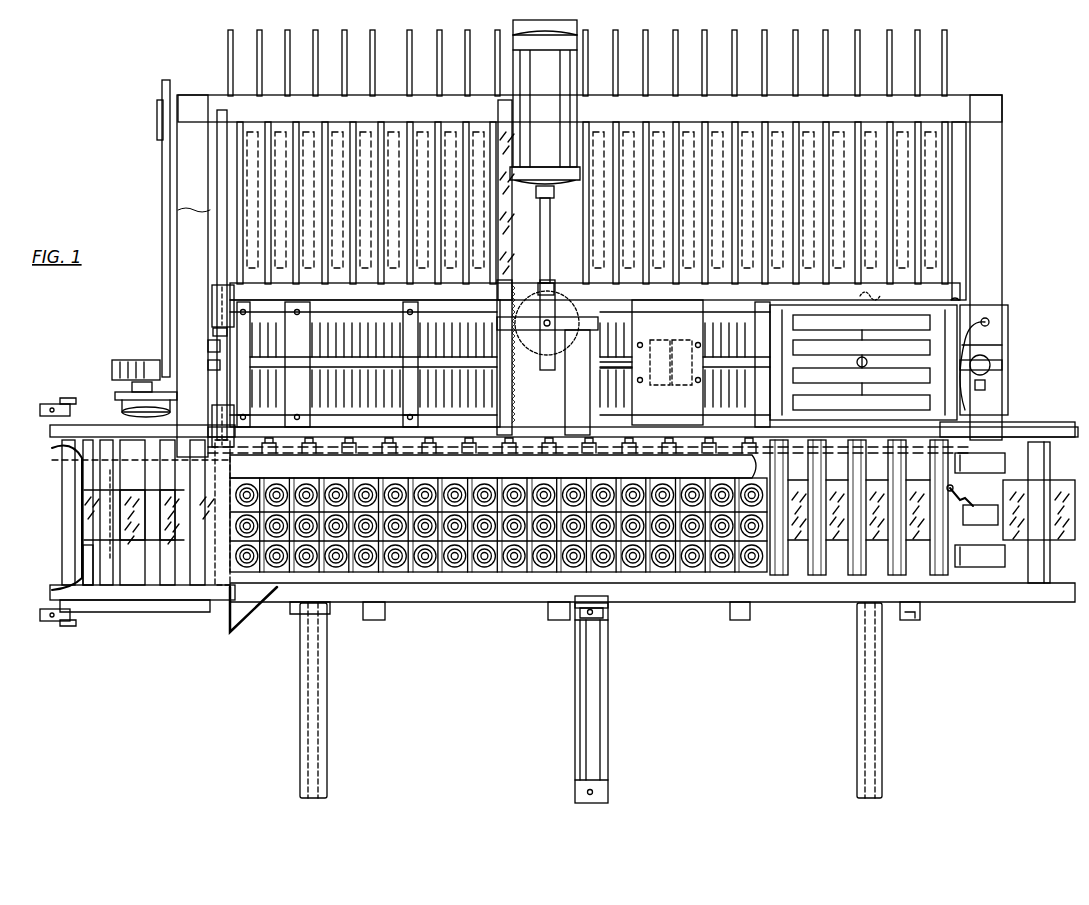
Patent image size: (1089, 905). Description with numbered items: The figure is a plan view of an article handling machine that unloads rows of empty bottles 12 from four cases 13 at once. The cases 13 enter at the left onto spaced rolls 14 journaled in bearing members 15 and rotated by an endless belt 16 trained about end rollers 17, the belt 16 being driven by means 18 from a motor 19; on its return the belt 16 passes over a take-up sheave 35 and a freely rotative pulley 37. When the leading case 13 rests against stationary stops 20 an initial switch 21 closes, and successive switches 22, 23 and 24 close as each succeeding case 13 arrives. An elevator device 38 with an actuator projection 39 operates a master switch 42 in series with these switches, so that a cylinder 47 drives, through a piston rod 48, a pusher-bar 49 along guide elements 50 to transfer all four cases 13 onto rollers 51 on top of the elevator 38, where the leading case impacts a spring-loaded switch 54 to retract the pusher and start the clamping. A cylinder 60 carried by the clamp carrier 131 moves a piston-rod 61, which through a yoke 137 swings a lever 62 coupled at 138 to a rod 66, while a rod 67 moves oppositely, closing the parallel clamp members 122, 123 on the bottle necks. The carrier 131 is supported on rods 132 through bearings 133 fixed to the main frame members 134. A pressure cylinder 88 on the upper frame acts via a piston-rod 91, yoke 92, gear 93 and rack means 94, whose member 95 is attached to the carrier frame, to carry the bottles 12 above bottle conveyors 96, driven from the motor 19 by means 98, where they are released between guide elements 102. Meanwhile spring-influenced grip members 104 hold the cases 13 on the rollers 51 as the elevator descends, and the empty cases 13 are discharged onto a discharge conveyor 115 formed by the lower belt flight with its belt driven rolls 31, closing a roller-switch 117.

The bottles 12 is at (355, 490).
The cases 13 is at (440, 485).
The rolls 14 is at (910, 492).
The bearing members 15 is at (50, 431).
The endless belt 16 is at (1050, 490).
The end rollers 17 is at (90, 547).
The drive means 18 is at (120, 390).
The motor 19 is at (100, 470).
The stationary stops 20 is at (980, 510).
The initial electric switch 21 is at (968, 505).
The switch 22 is at (762, 590).
The switch 23 is at (545, 590).
The switch 24 is at (395, 590).
The belt driven rolls 31 is at (1045, 558).
The take-up sheave 35 is at (108, 497).
The freely rotative pulley 37 is at (172, 515).
The elevator device 38 is at (800, 312).
The actuator projection 39 is at (1000, 330).
The master switch 42 is at (998, 364).
The cylinder 47 is at (600, 665).
The piston rod 48 is at (605, 610).
The pusher-bar 49 is at (660, 605).
The guide elements 50 is at (327, 706).
The rollers 51 is at (830, 400).
The spring-loaded switch 54 is at (860, 297).
The cylinder 60 is at (667, 362).
The piston-rod 61 is at (616, 362).
The lever 62 is at (208, 346).
The rod 66 is at (282, 330).
The rod 67 is at (492, 417).
The pressure cylinder 88 is at (545, 109).
The piston-rod 91 is at (550, 238).
The yoke 92 is at (510, 304).
The gear 93 is at (552, 282).
The rack means 94 is at (498, 260).
The member 95 is at (585, 303).
The bottle conveyors 96 is at (358, 132).
The means 98 is at (162, 150).
The guide elements 102 is at (490, 143).
The grip members 104 is at (975, 349).
The discharge conveyor 115 is at (1010, 420).
The roller-switch 117 is at (935, 602).
The clamp members 122 is at (380, 332).
The clamp members 123 is at (390, 400).
The clamp carrier 131 is at (770, 298).
The rods 132 is at (222, 232).
The bearings 133 is at (212, 295).
The main frame members 134 is at (195, 212).
The yoke 137 is at (210, 366).
The coupling 138 is at (212, 340).